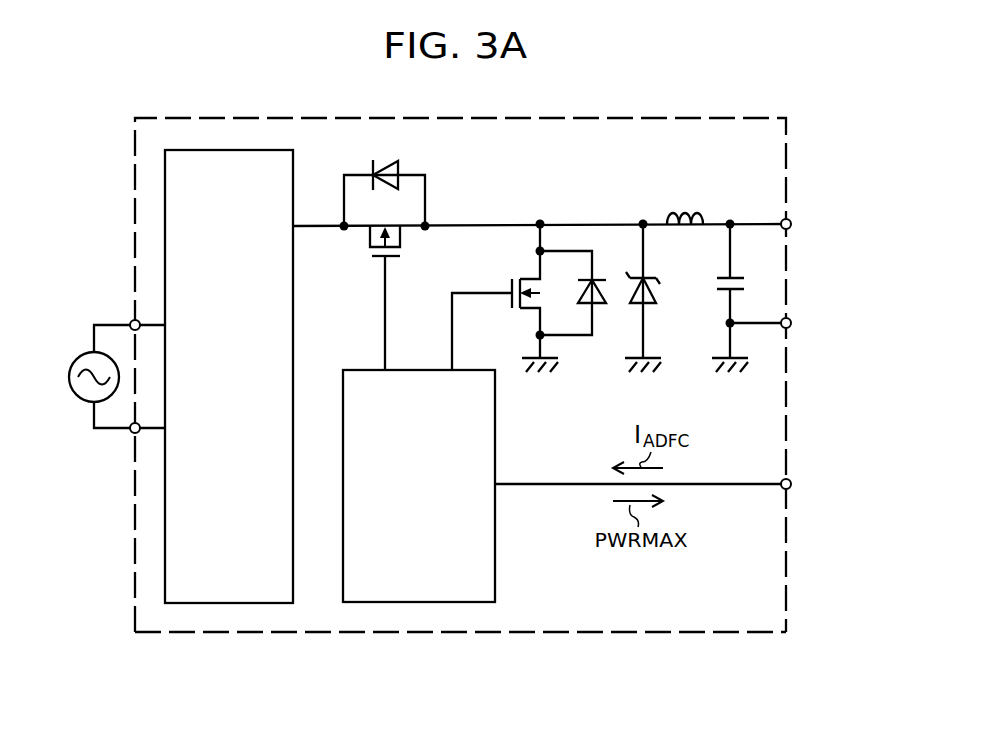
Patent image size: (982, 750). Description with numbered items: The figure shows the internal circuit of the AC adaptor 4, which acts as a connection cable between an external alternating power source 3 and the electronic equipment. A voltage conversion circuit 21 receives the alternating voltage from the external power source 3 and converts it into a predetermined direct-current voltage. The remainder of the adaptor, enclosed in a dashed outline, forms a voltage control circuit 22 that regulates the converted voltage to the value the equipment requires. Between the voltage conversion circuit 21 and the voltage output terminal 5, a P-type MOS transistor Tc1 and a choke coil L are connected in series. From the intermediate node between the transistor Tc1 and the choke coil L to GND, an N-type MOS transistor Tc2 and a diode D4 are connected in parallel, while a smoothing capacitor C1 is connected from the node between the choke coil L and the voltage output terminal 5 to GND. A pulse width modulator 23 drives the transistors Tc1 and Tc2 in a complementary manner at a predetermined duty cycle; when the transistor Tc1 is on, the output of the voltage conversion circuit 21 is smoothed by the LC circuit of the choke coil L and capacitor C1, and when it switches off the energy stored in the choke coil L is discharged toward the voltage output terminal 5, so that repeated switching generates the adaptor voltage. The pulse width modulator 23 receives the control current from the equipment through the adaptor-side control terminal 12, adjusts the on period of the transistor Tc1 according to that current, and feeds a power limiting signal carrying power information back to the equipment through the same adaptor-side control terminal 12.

The external power source 3 is at (74, 360).
The AC adaptor 4 is at (700, 632).
The voltage output terminal 5 is at (792, 224).
The adaptor-side control terminal 12 is at (792, 484).
The voltage conversion circuit 21 is at (243, 603).
The voltage control circuit 22 is at (715, 126).
The pulse width modulator 23 is at (495, 572).
The transistor Tc1 is at (373, 257).
The transistor Tc2 is at (512, 284).
The choke coil L is at (690, 213).
The capacitor C1 is at (742, 277).
The diode D4 is at (657, 284).
The element GND is at (792, 323).